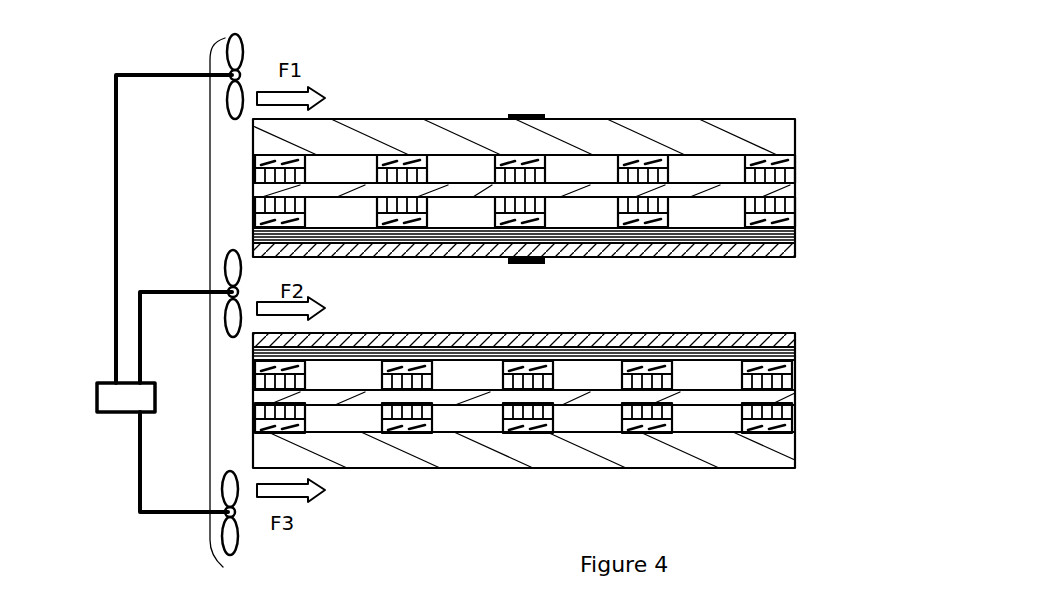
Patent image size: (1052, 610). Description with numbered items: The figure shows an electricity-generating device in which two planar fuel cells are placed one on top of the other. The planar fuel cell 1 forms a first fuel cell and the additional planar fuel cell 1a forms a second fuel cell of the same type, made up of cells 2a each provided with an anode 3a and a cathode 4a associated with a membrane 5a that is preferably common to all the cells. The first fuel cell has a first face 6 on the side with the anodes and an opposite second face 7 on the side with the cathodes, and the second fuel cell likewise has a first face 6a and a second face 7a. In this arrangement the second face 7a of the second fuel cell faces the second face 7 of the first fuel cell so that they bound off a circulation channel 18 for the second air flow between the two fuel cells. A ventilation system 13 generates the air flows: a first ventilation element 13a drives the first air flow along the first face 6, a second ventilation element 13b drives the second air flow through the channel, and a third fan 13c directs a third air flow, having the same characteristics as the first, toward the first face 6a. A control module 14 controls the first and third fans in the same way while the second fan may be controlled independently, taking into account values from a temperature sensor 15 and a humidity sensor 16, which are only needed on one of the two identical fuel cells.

The planar fuel cell 1 is at (568, 162).
The additional planar fuel cell 1a is at (603, 390).
The cells 2a is at (488, 415).
The anode 3a is at (553, 374).
The cathode 4a is at (568, 374).
The membrane 5a is at (785, 397).
The first face 6 is at (577, 113).
The first face 6a is at (742, 476).
The second face 7 is at (590, 257).
The second face 7a is at (711, 331).
The system 13 is at (174, 293).
The first ventilation element 13a is at (245, 48).
The second ventilation element 13b is at (212, 298).
The third fan 13c is at (236, 538).
The control module 14 is at (97, 397).
The temperature sensor 15 is at (530, 116).
The humidity sensor 16 is at (515, 266).
The circulation channel 18 is at (742, 271).